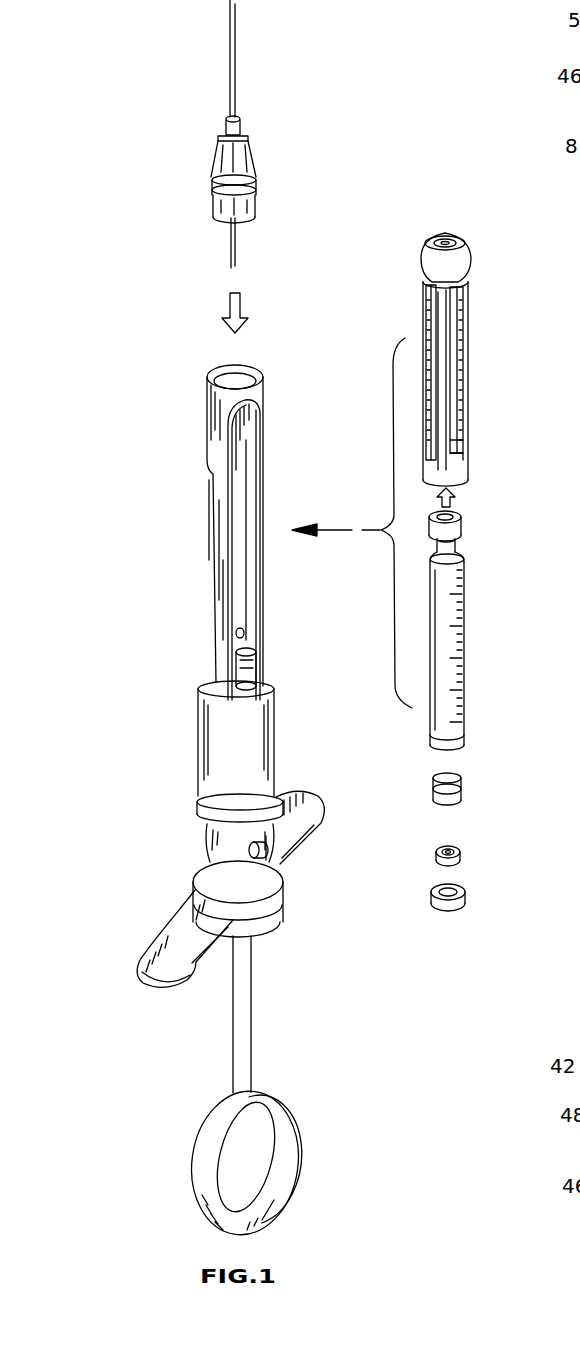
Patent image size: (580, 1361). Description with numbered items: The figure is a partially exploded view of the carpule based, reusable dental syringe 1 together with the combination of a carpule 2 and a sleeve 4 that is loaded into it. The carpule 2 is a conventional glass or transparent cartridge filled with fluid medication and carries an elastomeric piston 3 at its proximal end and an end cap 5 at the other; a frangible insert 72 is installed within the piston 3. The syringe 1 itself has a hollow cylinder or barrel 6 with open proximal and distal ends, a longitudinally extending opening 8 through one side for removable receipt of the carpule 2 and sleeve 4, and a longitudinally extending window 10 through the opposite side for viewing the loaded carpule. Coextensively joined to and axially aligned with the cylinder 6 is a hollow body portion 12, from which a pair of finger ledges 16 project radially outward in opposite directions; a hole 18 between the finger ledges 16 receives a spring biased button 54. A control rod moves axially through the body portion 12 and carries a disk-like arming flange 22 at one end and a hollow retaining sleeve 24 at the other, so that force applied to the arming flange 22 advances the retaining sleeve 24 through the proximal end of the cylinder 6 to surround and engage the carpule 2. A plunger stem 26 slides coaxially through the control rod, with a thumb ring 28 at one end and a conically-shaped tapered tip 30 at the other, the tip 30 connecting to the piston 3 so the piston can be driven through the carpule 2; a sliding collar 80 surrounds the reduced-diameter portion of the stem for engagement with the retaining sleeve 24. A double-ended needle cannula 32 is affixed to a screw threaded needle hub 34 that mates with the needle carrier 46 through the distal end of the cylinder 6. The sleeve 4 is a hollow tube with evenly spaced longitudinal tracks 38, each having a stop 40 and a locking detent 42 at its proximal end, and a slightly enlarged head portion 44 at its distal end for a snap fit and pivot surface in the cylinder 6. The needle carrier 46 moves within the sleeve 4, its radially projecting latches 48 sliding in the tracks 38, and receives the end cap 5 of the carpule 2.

The dental syringe 1 is at (140, 554).
The carpule 2 is at (495, 596).
The piston 3 is at (480, 783).
The sleeve 4 is at (495, 343).
The end cap 5 is at (463, 530).
The cylinder 6 is at (222, 598).
The opening 8 is at (250, 440).
The window 10 is at (227, 532).
The body portion 12 is at (258, 730).
The finger ledges 16 is at (173, 950).
The hole 18 is at (250, 860).
The arming flange 22 is at (278, 923).
The retaining sleeve 24 is at (250, 677).
The plunger stem 26 is at (242, 990).
The thumb ring 28 is at (205, 1155).
The tapered tip 30 is at (240, 629).
The needle cannula 32 is at (234, 42).
The needle hub 34 is at (250, 155).
The tracks 38 is at (425, 333).
The stop 40 is at (456, 455).
The locking detent 42 is at (448, 434).
The head portion 44 is at (466, 253).
The needle carrier 46 is at (437, 235).
The latches 48 is at (425, 296).
The spring biased button 54 is at (273, 862).
The frangible insert 72 is at (478, 843).
The sliding collar 80 is at (478, 888).